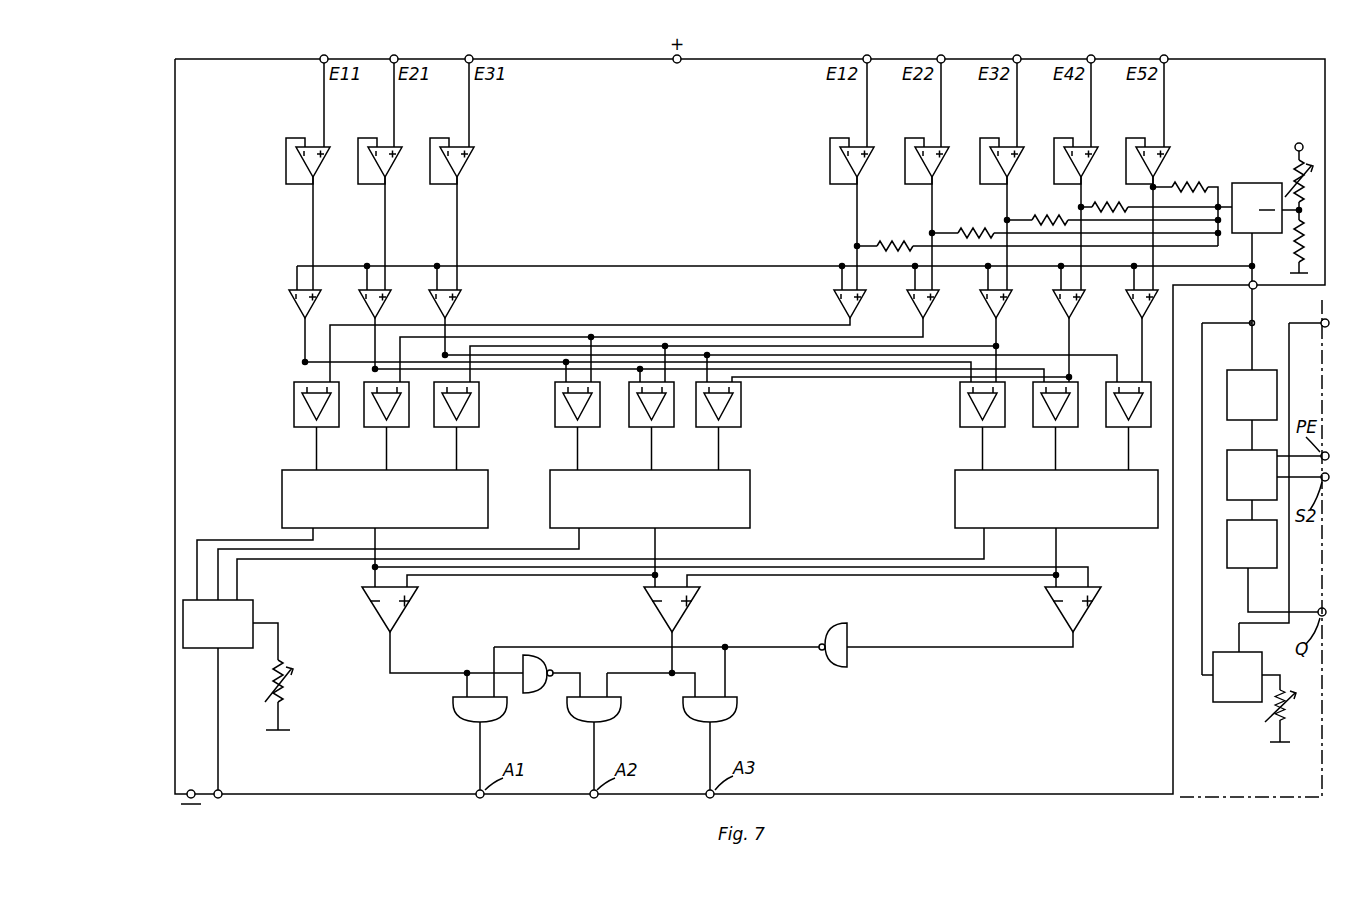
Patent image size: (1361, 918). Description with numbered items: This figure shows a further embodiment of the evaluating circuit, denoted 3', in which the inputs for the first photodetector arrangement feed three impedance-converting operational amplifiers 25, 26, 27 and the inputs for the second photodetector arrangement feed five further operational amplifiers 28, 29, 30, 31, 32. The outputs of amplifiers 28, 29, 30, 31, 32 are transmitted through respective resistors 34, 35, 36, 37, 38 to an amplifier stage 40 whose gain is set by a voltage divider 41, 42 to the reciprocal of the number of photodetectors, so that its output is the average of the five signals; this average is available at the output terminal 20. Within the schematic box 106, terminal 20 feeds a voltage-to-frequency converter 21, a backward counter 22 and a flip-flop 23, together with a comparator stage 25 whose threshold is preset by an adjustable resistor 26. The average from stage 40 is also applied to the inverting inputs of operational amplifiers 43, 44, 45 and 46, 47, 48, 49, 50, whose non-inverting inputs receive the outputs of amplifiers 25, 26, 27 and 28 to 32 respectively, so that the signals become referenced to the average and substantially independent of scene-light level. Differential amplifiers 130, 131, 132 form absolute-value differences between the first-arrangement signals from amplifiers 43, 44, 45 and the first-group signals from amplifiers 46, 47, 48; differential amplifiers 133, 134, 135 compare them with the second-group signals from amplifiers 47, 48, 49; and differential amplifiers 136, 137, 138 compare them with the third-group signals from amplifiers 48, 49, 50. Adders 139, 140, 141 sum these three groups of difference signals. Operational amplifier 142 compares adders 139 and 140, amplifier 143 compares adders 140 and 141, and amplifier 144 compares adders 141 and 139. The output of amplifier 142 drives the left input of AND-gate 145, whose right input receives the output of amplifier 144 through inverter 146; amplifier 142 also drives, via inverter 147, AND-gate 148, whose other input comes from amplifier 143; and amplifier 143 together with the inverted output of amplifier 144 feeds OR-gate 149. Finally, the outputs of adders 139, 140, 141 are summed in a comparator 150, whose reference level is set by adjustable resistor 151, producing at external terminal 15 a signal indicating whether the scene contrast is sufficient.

The evaluating circuit 3' is at (750, 426).
The external terminal 15 is at (223, 792).
The output terminal 20 is at (1249, 288).
The voltage-to-frequency converter 21 is at (1240, 377).
The counter 22 is at (1232, 458).
The flip-flop 23 is at (1230, 530).
The operational amplifier 25 is at (324, 176).
The operational amplifier 26 is at (397, 176).
The operational amplifier 27 is at (469, 176).
The operational amplifier 28 is at (842, 172).
The operational amplifier 29 is at (918, 170).
The operational amplifier 30 is at (990, 166).
The operational amplifier 31 is at (1065, 166).
The operational amplifier 32 is at (1132, 152).
The resistor 34 is at (894, 244).
The resistor 35 is at (972, 232).
The resistor 36 is at (1048, 219).
The resistor 37 is at (1118, 206).
The resistor 38 is at (1179, 186).
The amplifier stage 40 is at (1240, 184).
The voltage divider 41 is at (1290, 175).
The voltage divider 42 is at (1290, 245).
The operational amplifier 43 is at (318, 299).
The operational amplifier 44 is at (388, 299).
The operational amplifier 45 is at (458, 299).
The operational amplifier 46 is at (836, 306).
The operational amplifier 47 is at (909, 300).
The operational amplifier 48 is at (980, 300).
The operational amplifier 49 is at (1054, 300).
The operational amplifier 50 is at (1128, 300).
The schematic box 106 is at (1298, 778).
The differential amplifier 130 is at (316, 427).
The differential amplifier 131 is at (388, 427).
The differential amplifier 132 is at (460, 416).
The differential amplifier 133 is at (574, 427).
The differential amplifier 134 is at (654, 427).
The differential amplifier 135 is at (728, 427).
The differential amplifier 136 is at (960, 422).
The differential amplifier 137 is at (1032, 426).
The differential amplifier 138 is at (1106, 426).
The adder 139 is at (481, 498).
The adder 140 is at (750, 498).
The adder 141 is at (1107, 530).
The operational amplifier 142 is at (404, 604).
The operational amplifier 143 is at (686, 604).
The operational amplifier 144 is at (1082, 606).
The AND-gate 145 is at (454, 716).
The inverter 146 is at (840, 668).
The inverter 147 is at (537, 700).
The AND-gate 148 is at (620, 711).
The OR-gate 149 is at (738, 706).
The comparator 150 is at (248, 617).
The adjustable resistor 151 is at (287, 688).